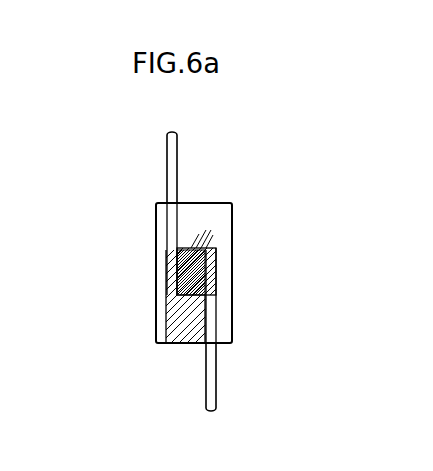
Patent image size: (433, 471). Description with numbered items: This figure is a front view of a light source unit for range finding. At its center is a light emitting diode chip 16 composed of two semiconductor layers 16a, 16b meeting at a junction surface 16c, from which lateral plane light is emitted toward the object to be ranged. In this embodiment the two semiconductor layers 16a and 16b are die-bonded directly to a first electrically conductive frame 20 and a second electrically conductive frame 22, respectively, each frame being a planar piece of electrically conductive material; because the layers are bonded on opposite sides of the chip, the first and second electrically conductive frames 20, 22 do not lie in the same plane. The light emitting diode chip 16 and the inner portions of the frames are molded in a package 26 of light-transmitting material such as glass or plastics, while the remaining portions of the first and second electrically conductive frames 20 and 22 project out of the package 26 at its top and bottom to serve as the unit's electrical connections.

The light emitting diode chip 16 is at (195, 332).
The semiconductor layer 16a is at (203, 292).
The semiconductor layer 16b is at (200, 288).
The junction surface 16c is at (200, 262).
The first electrically conductive frame 20 is at (217, 368).
The second electrically conductive frame 22 is at (178, 151).
The package 26 is at (156, 244).